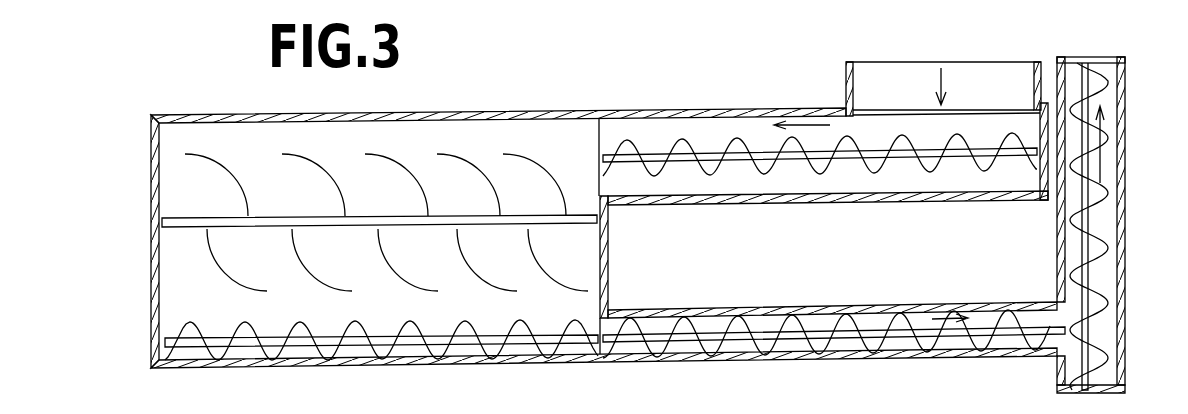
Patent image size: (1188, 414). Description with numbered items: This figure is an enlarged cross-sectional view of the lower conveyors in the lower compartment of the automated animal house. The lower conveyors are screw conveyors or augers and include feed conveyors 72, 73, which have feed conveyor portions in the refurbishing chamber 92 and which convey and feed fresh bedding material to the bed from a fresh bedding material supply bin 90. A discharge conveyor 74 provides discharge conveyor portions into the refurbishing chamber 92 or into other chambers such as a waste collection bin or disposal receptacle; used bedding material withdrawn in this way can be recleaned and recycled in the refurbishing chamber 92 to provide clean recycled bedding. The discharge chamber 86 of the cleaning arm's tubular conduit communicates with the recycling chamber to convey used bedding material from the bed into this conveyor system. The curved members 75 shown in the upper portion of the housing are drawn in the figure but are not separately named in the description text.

The feed conveyor 72 is at (1102, 210).
The feed conveyor 73 is at (643, 347).
The discharge conveyor 74 is at (690, 138).
The curved baffles 75 is at (523, 160).
The discharge chamber 86 is at (915, 62).
The fresh bedding material supply bin 90 is at (183, 300).
The refurbishing chamber 92 is at (188, 183).